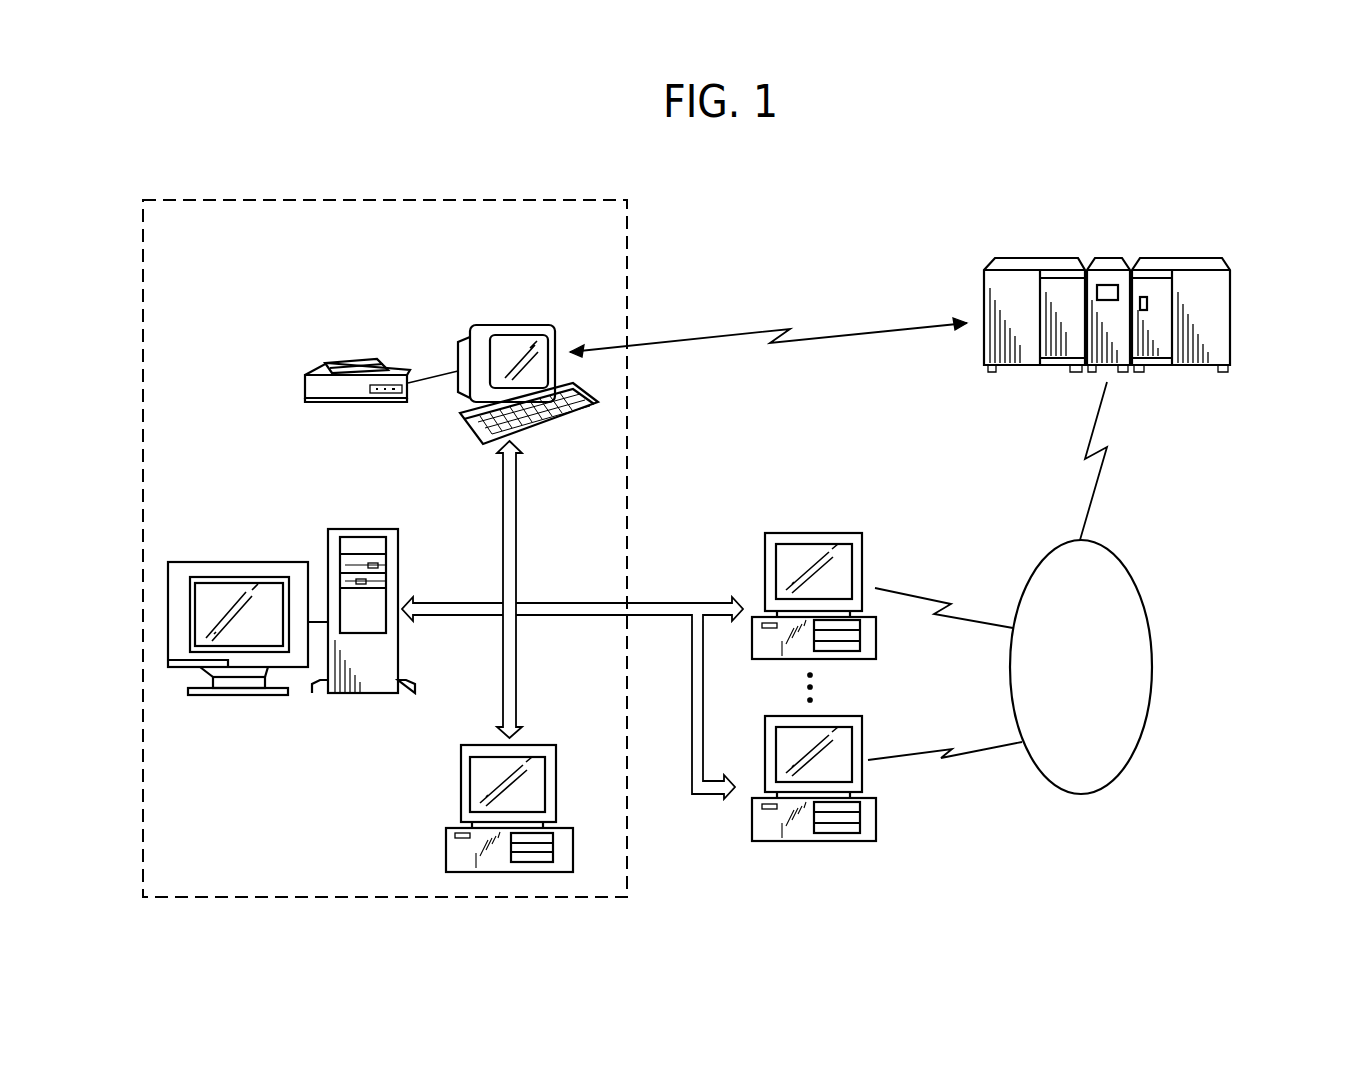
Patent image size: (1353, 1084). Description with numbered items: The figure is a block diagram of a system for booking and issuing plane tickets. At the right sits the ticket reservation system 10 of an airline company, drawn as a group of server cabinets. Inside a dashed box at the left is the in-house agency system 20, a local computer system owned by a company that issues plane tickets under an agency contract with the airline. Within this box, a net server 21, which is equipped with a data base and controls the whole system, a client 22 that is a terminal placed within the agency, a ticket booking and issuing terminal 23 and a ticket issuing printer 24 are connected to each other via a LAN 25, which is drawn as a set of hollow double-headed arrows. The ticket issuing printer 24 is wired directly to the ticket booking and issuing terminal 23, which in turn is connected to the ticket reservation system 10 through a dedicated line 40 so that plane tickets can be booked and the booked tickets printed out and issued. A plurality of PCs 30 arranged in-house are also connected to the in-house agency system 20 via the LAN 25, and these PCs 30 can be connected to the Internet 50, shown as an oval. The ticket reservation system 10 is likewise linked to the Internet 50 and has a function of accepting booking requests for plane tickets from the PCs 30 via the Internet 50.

The ticket reservation system 10 is at (1024, 259).
The in-house agency system 20 is at (628, 446).
The net server 21 is at (328, 536).
The client 22 is at (461, 790).
The ticket booking and issuing terminal 23 is at (508, 323).
The ticket issuing printer 24 is at (305, 377).
The LAN 25 is at (543, 603).
The PC 30 is at (822, 533).
The dedicated line 40 is at (756, 331).
The Internet 50 is at (1141, 583).